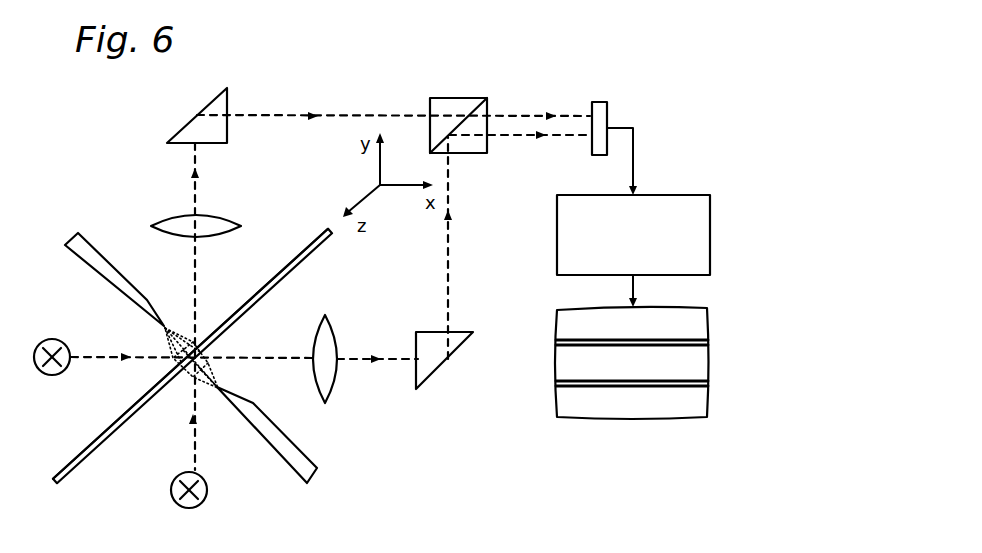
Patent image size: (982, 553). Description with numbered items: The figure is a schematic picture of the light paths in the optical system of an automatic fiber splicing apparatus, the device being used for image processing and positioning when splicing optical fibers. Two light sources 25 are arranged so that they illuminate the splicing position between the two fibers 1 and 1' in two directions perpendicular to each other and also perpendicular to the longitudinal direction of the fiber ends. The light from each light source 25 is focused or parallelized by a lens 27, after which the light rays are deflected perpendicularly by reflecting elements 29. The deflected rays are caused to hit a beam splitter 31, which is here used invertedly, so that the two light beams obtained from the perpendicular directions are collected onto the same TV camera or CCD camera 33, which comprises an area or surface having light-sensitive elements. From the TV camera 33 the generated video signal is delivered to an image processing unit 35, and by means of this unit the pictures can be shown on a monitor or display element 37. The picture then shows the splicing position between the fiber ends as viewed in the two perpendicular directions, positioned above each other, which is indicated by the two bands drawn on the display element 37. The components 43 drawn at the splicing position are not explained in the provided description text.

The substrate 1 is at (192, 356).
The substrate surface 1' is at (190, 354).
The light source 25 is at (50, 336).
The lens 27 is at (173, 218).
The prism 29 is at (225, 104).
The beam splitter 31 is at (473, 155).
The detector 33 is at (607, 113).
The image processing unit 35 is at (673, 197).
The display 37 is at (560, 402).
The optical fiber 43 is at (117, 275).